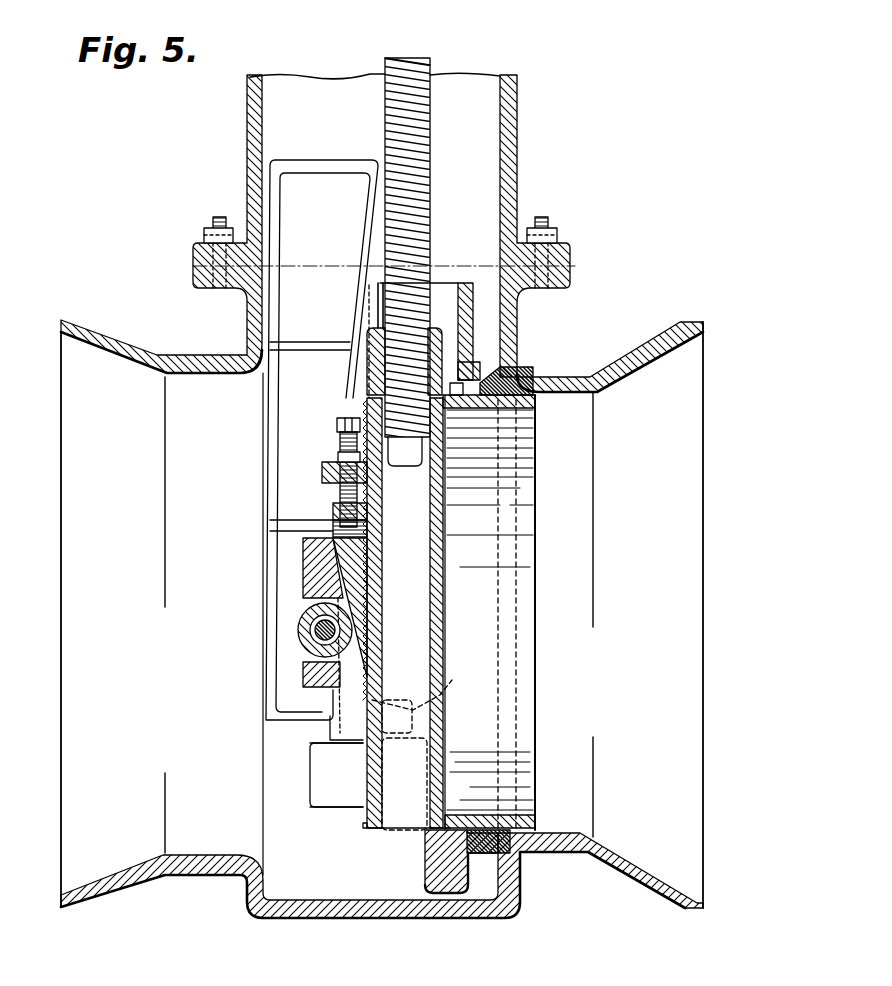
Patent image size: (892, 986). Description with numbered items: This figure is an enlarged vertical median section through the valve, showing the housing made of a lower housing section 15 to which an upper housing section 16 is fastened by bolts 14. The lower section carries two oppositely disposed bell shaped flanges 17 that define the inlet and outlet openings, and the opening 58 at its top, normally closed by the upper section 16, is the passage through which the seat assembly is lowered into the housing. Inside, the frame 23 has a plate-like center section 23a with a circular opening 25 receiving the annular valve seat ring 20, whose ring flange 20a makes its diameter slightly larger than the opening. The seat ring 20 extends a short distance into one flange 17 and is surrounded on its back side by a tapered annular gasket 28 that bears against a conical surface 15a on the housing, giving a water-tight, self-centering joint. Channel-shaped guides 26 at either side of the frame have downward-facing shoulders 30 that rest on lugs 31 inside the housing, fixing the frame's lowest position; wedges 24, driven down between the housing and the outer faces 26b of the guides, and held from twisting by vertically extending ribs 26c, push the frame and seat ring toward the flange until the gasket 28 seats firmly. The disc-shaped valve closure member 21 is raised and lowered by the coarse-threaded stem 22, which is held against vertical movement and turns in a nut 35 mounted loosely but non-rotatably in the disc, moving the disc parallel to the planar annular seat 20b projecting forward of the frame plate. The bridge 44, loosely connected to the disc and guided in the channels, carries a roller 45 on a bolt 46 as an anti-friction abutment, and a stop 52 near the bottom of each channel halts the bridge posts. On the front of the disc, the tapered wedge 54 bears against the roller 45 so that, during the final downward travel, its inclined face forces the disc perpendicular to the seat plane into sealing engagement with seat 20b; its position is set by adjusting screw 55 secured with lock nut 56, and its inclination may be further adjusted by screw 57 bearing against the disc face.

The bolts 14 is at (226, 218).
The lower housing section 15 is at (287, 914).
The conical surface 15a is at (517, 853).
The upper housing section 16 is at (520, 111).
The bell shaped flange 17 is at (68, 797).
The valve seat ring 20 is at (530, 488).
The ring flange 20a is at (468, 841).
The annular seat 20b is at (457, 815).
The valve closure member 21 is at (368, 779).
The stem 22 is at (430, 151).
The frame 23 is at (490, 322).
The plate-like center section 23a is at (481, 288).
The wedges 24 is at (277, 241).
The circular opening 25 is at (480, 412).
The guides 26 is at (437, 288).
The outer face 26b is at (372, 300).
The vertically extending ribs 26c is at (330, 745).
The annular gasket 28 is at (495, 372).
The frame positioning shoulders 30 is at (346, 728).
The lugs 31 is at (322, 748).
The nut 35 is at (372, 371).
The bridge 44 is at (293, 587).
The roller 45 is at (302, 641).
The bolt 46 is at (318, 629).
The stop 52 is at (440, 690).
The tapered wedge 54 is at (373, 616).
The adjusting screw 55 is at (337, 437).
The lock nut 56 is at (335, 458).
The screw 57 is at (330, 522).
The opening 58 is at (487, 300).